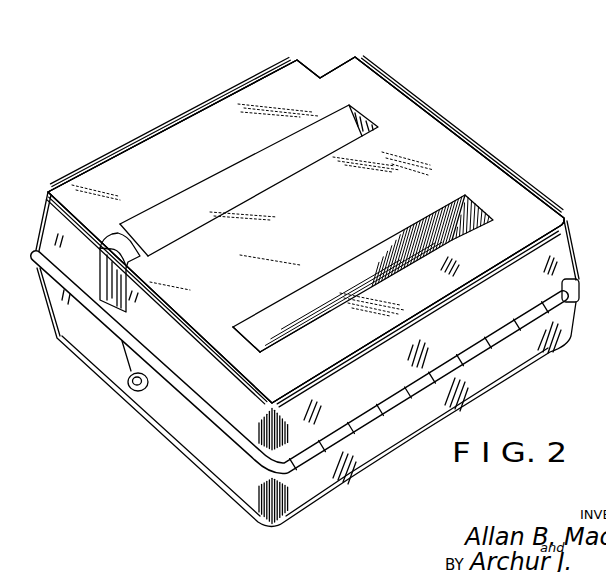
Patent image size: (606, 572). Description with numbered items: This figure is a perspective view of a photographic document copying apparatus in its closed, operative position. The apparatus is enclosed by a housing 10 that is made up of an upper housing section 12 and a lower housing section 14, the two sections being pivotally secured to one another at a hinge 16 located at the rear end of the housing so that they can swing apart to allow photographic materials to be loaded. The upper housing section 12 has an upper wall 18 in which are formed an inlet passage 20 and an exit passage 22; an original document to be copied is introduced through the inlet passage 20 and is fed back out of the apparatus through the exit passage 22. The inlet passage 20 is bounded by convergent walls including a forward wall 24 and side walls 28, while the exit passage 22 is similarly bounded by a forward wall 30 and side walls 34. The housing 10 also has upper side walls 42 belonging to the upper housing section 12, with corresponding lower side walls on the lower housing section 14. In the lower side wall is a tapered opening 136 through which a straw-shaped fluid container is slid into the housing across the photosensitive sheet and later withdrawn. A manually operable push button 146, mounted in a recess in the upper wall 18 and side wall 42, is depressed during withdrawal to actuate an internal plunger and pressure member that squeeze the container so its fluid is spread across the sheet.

The housing 10 is at (394, 67).
The upper housing section 12 is at (465, 128).
The lower housing section 14 is at (88, 369).
The hinge 16 is at (403, 398).
The upper wall 18 is at (278, 256).
The inlet passage 20 is at (373, 280).
The exit passage 22 is at (258, 193).
The forward wall 24 is at (272, 318).
The side walls 28 is at (478, 175).
The forward wall 30 is at (198, 200).
The side walls 34 is at (367, 125).
The upper side walls 42 is at (193, 367).
The tapered opening 136 is at (128, 394).
The push button 146 is at (105, 264).